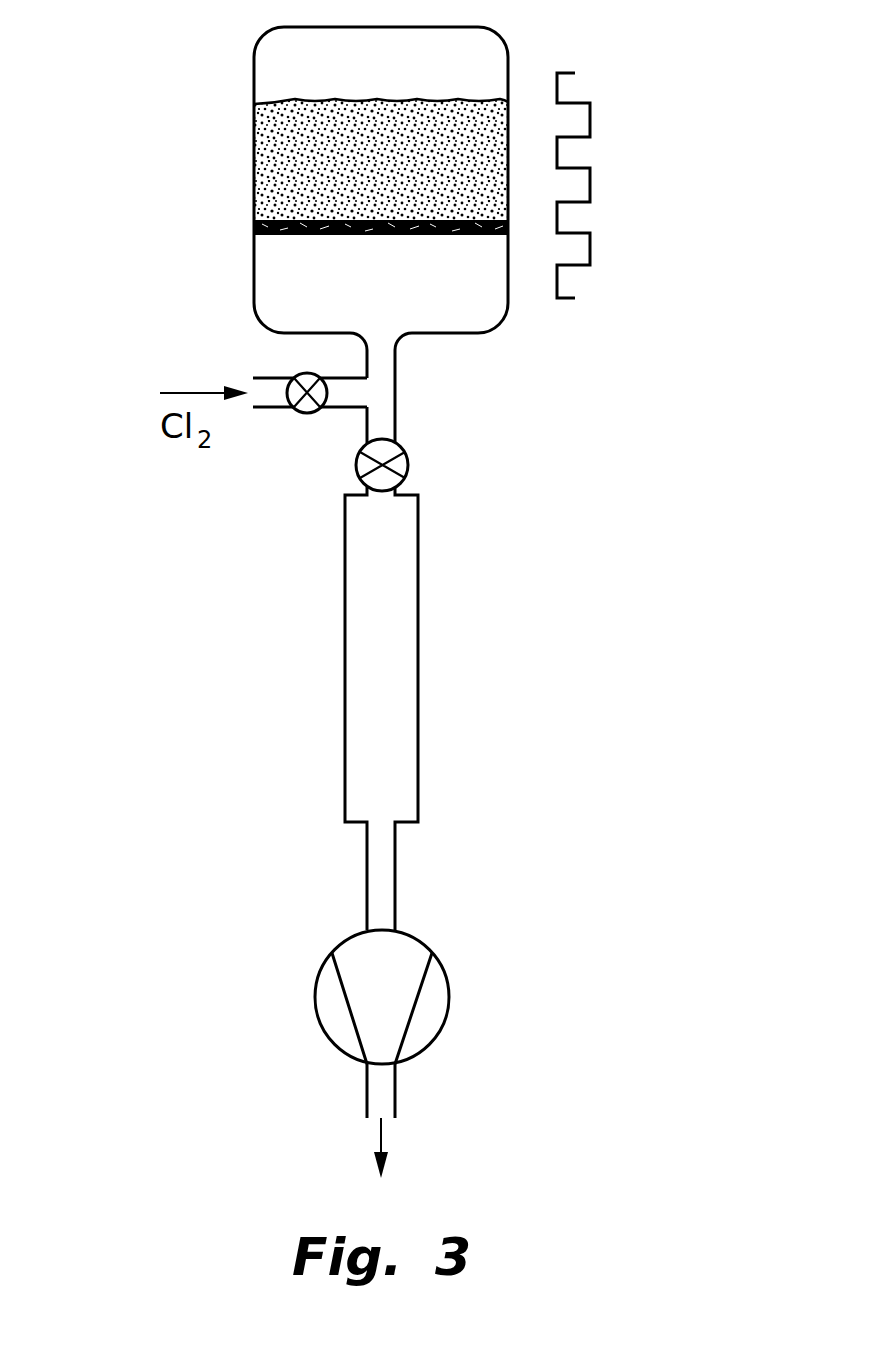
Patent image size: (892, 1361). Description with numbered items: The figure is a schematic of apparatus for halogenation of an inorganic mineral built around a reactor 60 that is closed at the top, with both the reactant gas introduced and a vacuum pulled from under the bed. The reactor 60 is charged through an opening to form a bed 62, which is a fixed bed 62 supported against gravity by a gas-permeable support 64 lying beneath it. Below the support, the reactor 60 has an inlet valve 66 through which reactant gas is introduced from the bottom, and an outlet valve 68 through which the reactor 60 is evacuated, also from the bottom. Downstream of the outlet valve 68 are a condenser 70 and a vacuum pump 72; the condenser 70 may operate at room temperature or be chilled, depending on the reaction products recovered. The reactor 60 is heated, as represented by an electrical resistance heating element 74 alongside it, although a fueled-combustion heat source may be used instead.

The reactor 60 is at (168, 186).
The bed 62 is at (300, 135).
The gas-permeable support 64 is at (292, 236).
The inlet valve 66 is at (305, 414).
The outlet valve 68 is at (407, 459).
The condenser 70 is at (418, 623).
The vacuum pump 72 is at (450, 1007).
The electrical resistance heating element 74 is at (590, 118).